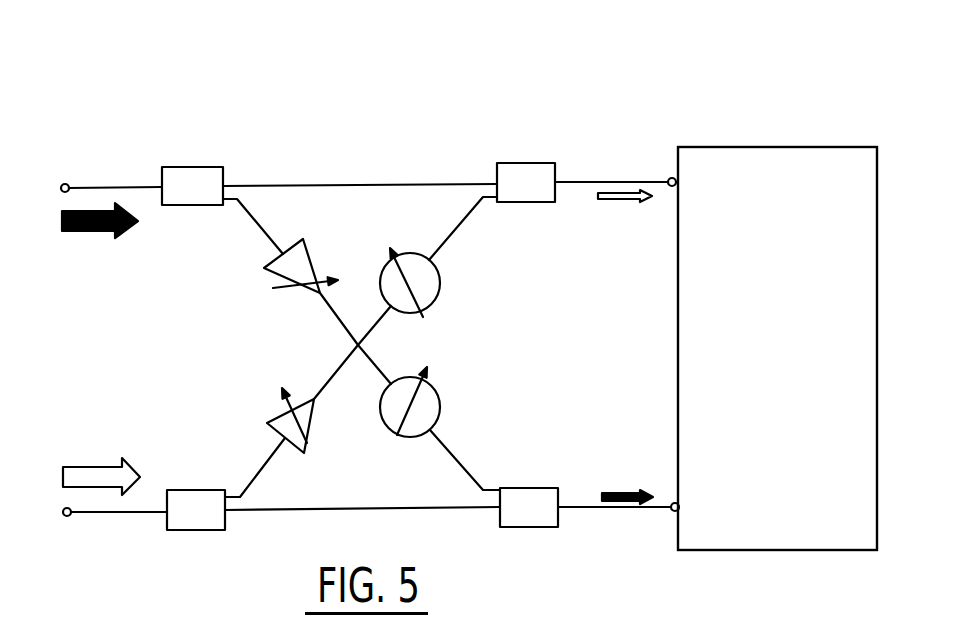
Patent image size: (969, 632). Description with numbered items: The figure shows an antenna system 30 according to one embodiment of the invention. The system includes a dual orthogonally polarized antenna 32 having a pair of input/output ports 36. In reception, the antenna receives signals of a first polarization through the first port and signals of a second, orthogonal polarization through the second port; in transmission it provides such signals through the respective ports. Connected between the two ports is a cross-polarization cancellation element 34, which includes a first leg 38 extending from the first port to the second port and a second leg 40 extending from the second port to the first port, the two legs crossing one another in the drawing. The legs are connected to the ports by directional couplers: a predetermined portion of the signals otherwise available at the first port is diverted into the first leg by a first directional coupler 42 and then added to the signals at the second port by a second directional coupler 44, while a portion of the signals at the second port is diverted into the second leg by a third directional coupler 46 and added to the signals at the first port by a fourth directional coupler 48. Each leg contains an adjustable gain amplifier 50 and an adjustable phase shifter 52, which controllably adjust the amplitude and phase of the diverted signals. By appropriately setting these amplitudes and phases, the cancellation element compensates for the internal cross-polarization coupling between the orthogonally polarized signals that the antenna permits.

The antenna system 30 is at (533, 62).
The dual orthogonally polarized antenna 32 is at (868, 197).
The cross-polarization cancellation element 34 is at (375, 157).
The input/output ports 36 is at (668, 179).
The first leg 38 is at (262, 223).
The second leg 40 is at (458, 217).
The first directional coupler 42 is at (177, 175).
The second directional coupler 44 is at (515, 522).
The third directional coupler 46 is at (178, 525).
The fourth directional coupler 48 is at (517, 172).
The adjustable gain amplifier 50 is at (310, 293).
The adjustable phase shifter 52 is at (402, 376).